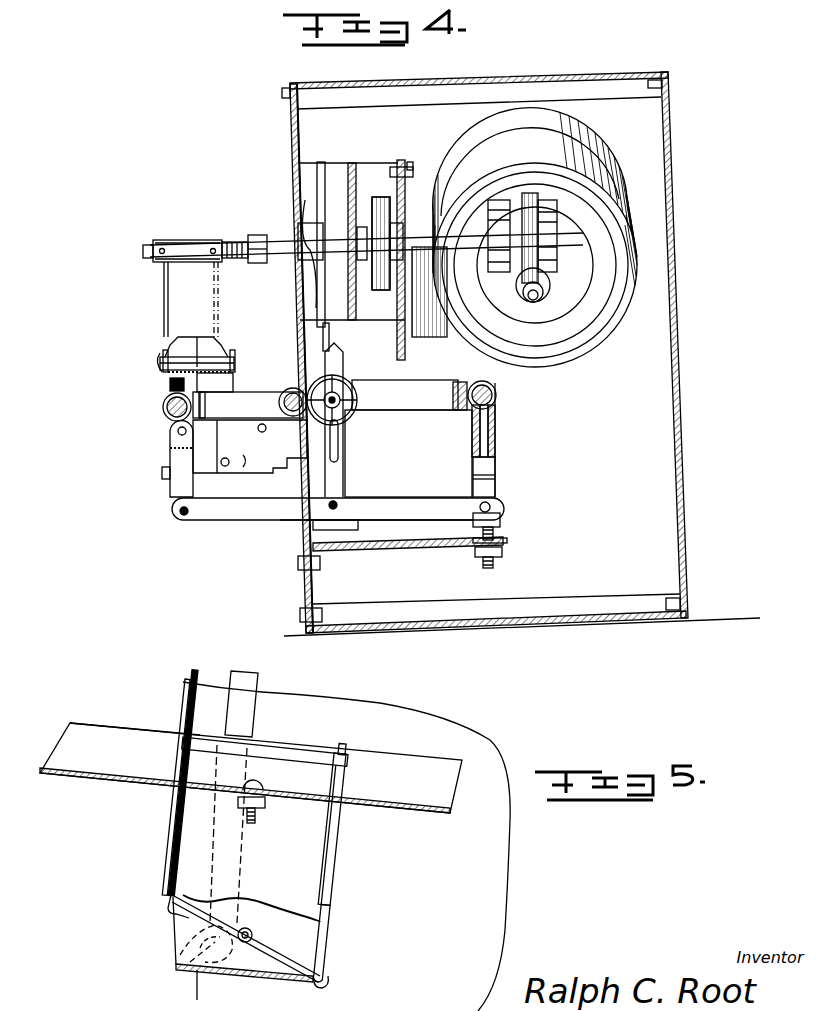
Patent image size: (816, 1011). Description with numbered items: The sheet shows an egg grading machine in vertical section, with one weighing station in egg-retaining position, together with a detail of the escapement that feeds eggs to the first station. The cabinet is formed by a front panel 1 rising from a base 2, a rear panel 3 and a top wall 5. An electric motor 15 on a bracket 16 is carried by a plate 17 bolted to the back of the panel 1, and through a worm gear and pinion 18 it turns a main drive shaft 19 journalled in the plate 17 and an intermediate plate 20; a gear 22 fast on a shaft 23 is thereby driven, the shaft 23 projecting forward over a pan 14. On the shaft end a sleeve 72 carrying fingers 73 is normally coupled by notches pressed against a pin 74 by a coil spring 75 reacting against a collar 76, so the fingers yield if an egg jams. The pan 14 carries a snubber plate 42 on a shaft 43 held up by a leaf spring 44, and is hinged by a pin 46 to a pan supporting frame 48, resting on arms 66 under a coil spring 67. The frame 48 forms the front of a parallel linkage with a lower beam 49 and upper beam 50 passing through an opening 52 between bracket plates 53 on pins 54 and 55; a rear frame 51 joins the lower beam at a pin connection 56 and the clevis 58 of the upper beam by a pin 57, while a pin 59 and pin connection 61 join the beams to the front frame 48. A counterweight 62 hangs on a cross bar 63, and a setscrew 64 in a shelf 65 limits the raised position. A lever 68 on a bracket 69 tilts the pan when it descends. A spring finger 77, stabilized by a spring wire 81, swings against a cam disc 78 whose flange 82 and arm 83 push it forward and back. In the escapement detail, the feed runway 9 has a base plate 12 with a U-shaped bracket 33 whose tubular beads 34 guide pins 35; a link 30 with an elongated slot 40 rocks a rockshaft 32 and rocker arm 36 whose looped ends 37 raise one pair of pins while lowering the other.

In FIG. 4, the panel 1 is at (290, 136).
In FIG. 5, the panel 1 is at (500, 746).
In FIG. 4, the base 2 is at (612, 623).
In FIG. 4, the rear panel 3 is at (686, 400).
In FIG. 4, the top wall 5 is at (538, 77).
In FIG. 5, the feed runway 9 is at (133, 720).
In FIG. 5, the base plate 12 is at (146, 782).
In FIG. 4, the pan 14 is at (230, 355).
In FIG. 4, the electric motor 15 is at (580, 142).
In FIG. 4, the bracket 16 is at (413, 175).
In FIG. 4, the plate 17 is at (401, 160).
In FIG. 4, the worm gear and pinion 18 is at (541, 300).
In FIG. 4, the main drive shaft 19 is at (414, 246).
In FIG. 4, the intermediate plate 20 is at (360, 227).
In FIG. 4, the gear 22 is at (380, 197).
In FIG. 4, the shaft 23 is at (262, 241).
In FIG. 5, the link 30 is at (258, 710).
In FIG. 5, the rockshaft 32 is at (252, 934).
In FIG. 5, the U-shaped bracket 33 is at (315, 842).
In FIG. 5, the tubular beads 34 is at (170, 838).
In FIG. 5, the egg holding and releasing pins 35 is at (196, 668).
In FIG. 5, the rocker arm 36 is at (282, 956).
In FIG. 5, the looped ends 37 is at (168, 912).
In FIG. 5, the elongated slot 40 is at (178, 952).
In FIG. 4, the snubber plate 42 is at (178, 346).
In FIG. 4, the shaft 43 is at (236, 360).
In FIG. 4, the leaf spring 44 is at (197, 337).
In FIG. 4, the pin 46 is at (169, 386).
In FIG. 4, the pan supporting frame 48 is at (170, 488).
In FIG. 4, the lower beam 49 is at (414, 497).
In FIG. 4, the upper beam 50 is at (400, 408).
In FIG. 4, the rear frame 51 is at (496, 466).
In FIG. 4, the opening 52 is at (302, 486).
In FIG. 4, the bracket plates 53 is at (352, 465).
In FIG. 4, the pin 54 is at (336, 502).
In FIG. 4, the pin 55 is at (340, 396).
In FIG. 4, the pin connection 56 is at (492, 503).
In FIG. 4, the pin 57 is at (497, 395).
In FIG. 4, the clevis 58 is at (470, 382).
In FIG. 4, the pin 59 is at (168, 414).
In FIG. 4, the pin connection 61 is at (186, 518).
In FIG. 4, the counterweight 62 is at (496, 430).
In FIG. 4, the cross bar 63 is at (474, 428).
In FIG. 4, the setscrew 64 is at (501, 520).
In FIG. 4, the shelf 65 is at (438, 551).
In FIG. 4, the arms 66 is at (234, 380).
In FIG. 4, the coil spring 67 is at (160, 372).
In FIG. 4, the lever 68 is at (204, 470).
In FIG. 4, the bracket 69 is at (242, 476).
In FIG. 4, the sleeve 72 is at (170, 240).
In FIG. 4, the fingers 73 is at (160, 282).
In FIG. 4, the pin 74 is at (147, 244).
In FIG. 4, the coil spring 75 is at (236, 242).
In FIG. 4, the collar 76 is at (260, 263).
In FIG. 4, the spring finger 77 is at (336, 356).
In FIG. 4, the cam disc 78 is at (351, 163).
In FIG. 4, the spring wire 81 is at (293, 396).
In FIG. 4, the flange 82 is at (315, 337).
In FIG. 4, the arm 83 is at (320, 162).